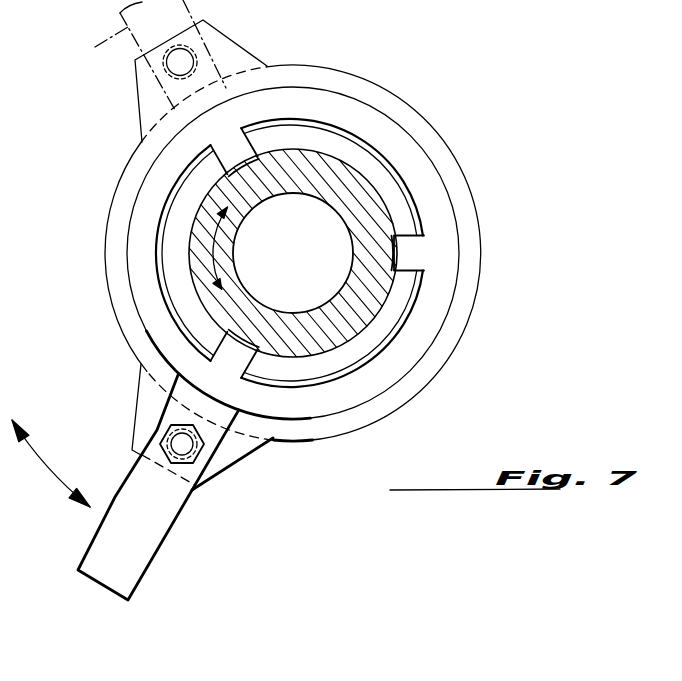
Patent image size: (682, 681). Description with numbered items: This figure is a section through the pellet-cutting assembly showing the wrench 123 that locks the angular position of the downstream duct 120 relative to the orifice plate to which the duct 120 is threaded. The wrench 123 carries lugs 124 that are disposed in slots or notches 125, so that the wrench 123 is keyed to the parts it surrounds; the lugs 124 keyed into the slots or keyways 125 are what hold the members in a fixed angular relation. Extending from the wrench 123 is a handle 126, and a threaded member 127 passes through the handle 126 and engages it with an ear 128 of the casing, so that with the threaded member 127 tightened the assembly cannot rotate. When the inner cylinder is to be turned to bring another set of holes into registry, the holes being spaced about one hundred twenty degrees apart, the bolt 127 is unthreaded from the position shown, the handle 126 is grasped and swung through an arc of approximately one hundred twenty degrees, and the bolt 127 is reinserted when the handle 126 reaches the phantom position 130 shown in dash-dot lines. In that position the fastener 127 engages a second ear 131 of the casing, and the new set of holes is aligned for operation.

The downstream duct 120 is at (233, 253).
The wrench 123 is at (418, 163).
The lugs 124 is at (407, 253).
The slots or notches 125 is at (398, 230).
The handle 126 is at (158, 527).
The threaded member 127 is at (178, 437).
The ear 128 is at (233, 457).
The phantom position 130 is at (95, 47).
The ear 131 is at (230, 52).